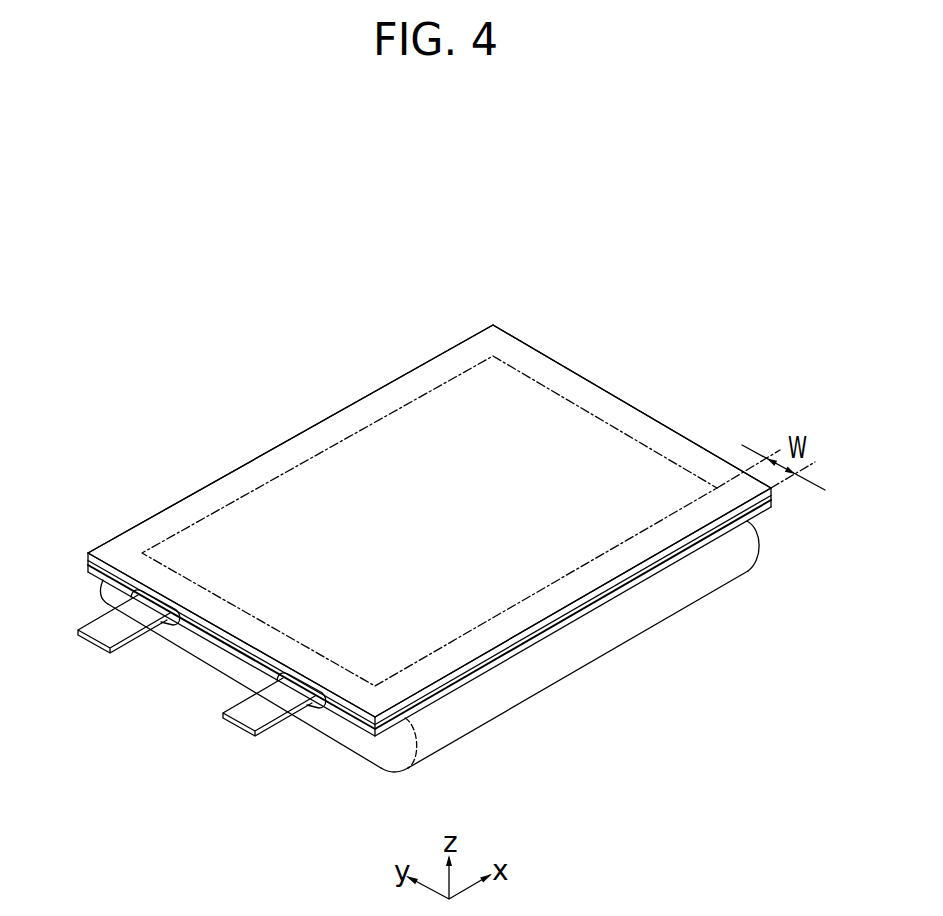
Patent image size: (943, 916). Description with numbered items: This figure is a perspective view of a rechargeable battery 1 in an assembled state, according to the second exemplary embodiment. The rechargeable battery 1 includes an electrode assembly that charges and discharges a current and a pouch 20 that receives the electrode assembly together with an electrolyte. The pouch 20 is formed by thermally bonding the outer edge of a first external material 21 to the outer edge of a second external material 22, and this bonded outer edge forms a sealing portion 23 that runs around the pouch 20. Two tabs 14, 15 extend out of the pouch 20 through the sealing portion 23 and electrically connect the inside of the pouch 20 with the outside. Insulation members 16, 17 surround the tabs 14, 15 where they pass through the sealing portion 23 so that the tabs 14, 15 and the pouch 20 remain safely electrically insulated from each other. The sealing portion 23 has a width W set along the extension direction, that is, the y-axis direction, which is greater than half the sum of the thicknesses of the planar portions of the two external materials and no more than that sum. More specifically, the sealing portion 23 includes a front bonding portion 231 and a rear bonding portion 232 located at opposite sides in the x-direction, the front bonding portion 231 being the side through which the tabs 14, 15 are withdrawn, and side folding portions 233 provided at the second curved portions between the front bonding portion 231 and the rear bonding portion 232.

The rechargeable battery 1 is at (551, 335).
The tab 14 is at (100, 625).
The tab 15 is at (249, 718).
The insulation member 16 is at (157, 598).
The insulation member 17 is at (302, 683).
The pouch 20 is at (655, 704).
The first external material 21 is at (528, 645).
The second external material 22 is at (557, 617).
The sealing portion 23 is at (178, 403).
The front bonding portion 231 is at (243, 623).
The rear bonding portion 232 is at (610, 415).
The side folding portion 233 is at (357, 420).